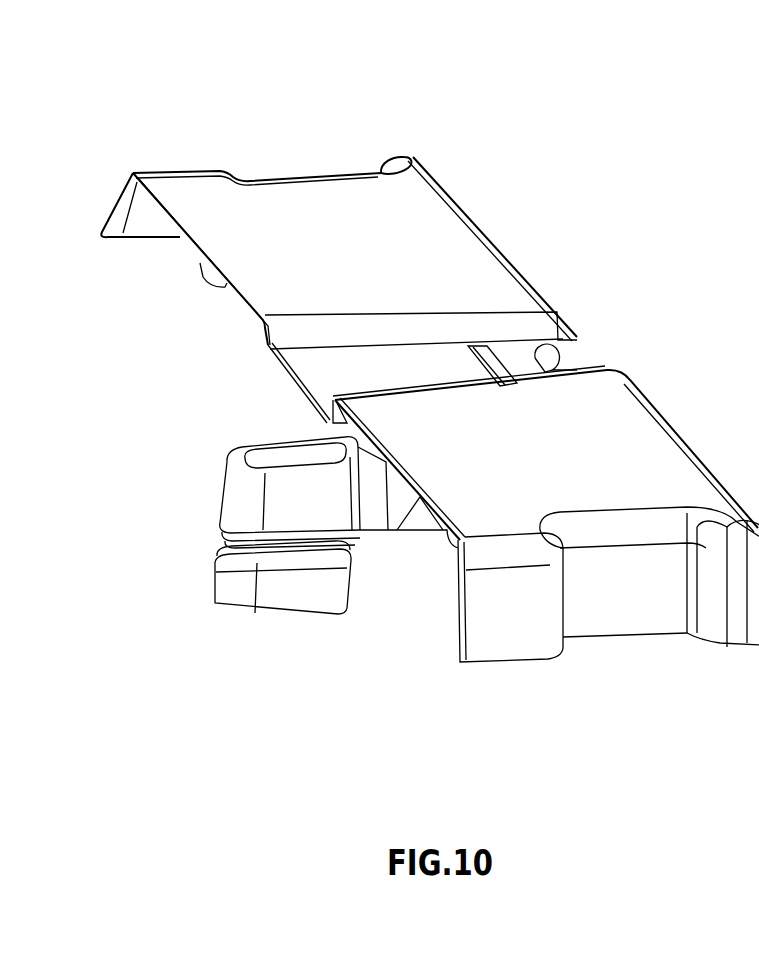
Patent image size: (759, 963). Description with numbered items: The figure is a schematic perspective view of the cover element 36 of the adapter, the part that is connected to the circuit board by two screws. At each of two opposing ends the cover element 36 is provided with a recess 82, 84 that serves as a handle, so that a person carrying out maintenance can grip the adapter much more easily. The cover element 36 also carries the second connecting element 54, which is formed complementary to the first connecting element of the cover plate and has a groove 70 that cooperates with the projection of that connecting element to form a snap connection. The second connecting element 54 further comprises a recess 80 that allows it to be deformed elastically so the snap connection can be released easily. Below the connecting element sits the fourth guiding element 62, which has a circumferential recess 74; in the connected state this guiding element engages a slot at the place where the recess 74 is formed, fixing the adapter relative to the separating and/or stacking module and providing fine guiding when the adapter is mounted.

The cover element 36 is at (532, 104).
The recess 82 is at (298, 158).
The groove 70 is at (489, 360).
The recess 80 is at (565, 365).
The second connecting element 54 is at (330, 371).
The circumferential recess 74 is at (233, 548).
The fourth guiding element 62 is at (243, 598).
The recess 84 is at (641, 586).